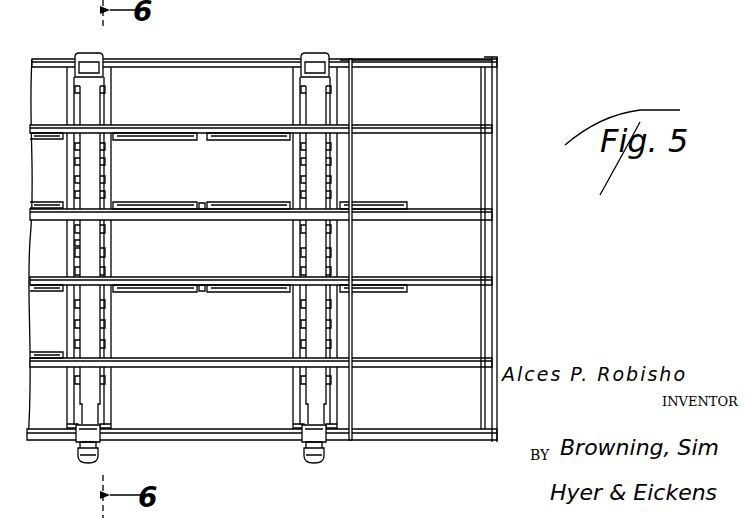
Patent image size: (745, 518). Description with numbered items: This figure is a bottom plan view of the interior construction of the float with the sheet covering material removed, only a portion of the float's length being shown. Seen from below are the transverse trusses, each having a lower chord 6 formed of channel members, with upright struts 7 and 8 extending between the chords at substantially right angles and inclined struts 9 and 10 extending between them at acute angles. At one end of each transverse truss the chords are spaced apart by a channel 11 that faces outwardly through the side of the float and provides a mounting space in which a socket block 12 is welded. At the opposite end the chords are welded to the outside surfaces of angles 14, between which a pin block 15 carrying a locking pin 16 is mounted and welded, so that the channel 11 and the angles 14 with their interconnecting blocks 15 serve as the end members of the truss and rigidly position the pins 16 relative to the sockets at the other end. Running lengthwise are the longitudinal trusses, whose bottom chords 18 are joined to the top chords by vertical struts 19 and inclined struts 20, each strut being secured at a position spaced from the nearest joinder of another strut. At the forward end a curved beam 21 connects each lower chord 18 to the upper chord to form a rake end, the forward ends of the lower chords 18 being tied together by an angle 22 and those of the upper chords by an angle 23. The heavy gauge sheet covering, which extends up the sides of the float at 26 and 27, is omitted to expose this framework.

The lower chord 6 is at (111, 249).
The upright strut 7 is at (103, 152).
The upright strut 8 is at (74, 243).
The inclined strut 9 is at (100, 112).
The inclined strut 10 is at (100, 161).
The channel 11 is at (108, 62).
The socket block 12 is at (88, 53).
The angle 14 is at (65, 438).
The pin block 15 is at (305, 442).
The locking pin 16 is at (88, 463).
The bottom chord 18 is at (210, 127).
The vertical strut 19 is at (206, 203).
The inclined strut 20 is at (172, 202).
The curved beam 21 is at (440, 284).
The angle 22 is at (352, 388).
The angle 23 is at (490, 234).
The sheet covering material 26 is at (398, 445).
The sheet covering material 27 is at (393, 60).